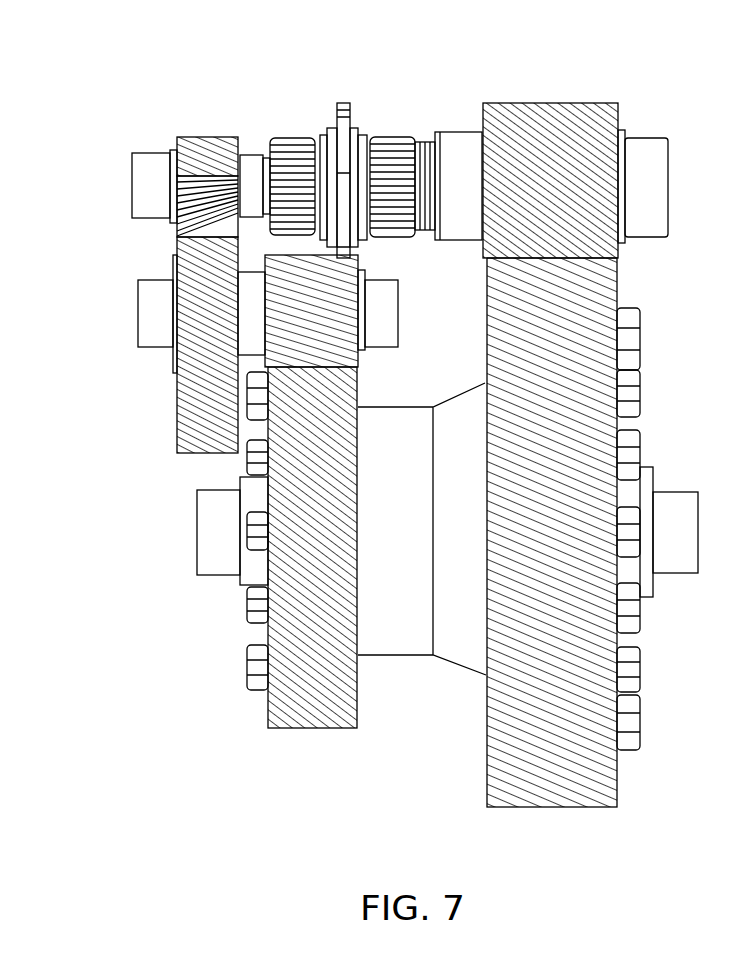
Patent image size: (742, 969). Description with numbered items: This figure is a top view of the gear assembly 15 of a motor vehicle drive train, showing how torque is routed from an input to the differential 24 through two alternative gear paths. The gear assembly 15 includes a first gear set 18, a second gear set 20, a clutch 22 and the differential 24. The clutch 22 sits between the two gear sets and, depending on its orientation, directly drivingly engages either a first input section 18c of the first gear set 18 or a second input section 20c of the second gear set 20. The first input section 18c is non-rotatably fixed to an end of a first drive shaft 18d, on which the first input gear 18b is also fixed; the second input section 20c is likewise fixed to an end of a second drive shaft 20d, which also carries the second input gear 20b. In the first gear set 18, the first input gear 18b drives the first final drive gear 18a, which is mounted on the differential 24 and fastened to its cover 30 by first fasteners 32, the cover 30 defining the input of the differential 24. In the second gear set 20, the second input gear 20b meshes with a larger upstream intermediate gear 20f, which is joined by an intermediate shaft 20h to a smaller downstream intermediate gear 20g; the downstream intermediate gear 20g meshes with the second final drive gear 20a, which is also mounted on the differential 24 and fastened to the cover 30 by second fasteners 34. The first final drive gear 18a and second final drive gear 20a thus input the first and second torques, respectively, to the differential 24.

The gear assembly 15 is at (103, 600).
The first gear set 18 is at (640, 78).
The first final drive gear 18a is at (550, 795).
The first input gear 18b is at (517, 130).
The first input section 18c is at (392, 143).
The first drive shaft 18d is at (448, 148).
The second gear set 20 is at (208, 100).
The second final drive gear 20a is at (295, 702).
The second input gear 20b is at (198, 145).
The second input section 20c is at (287, 148).
The second drive shaft 20d is at (248, 160).
The upstream intermediate gear 20f is at (177, 245).
The downstream intermediate gear 20g is at (330, 343).
The intermediate shaft 20h is at (155, 328).
The clutch 22 is at (350, 85).
The differential 24 is at (434, 698).
The cover 30 is at (392, 647).
The first fasteners 32 is at (638, 677).
The second fasteners 34 is at (250, 462).